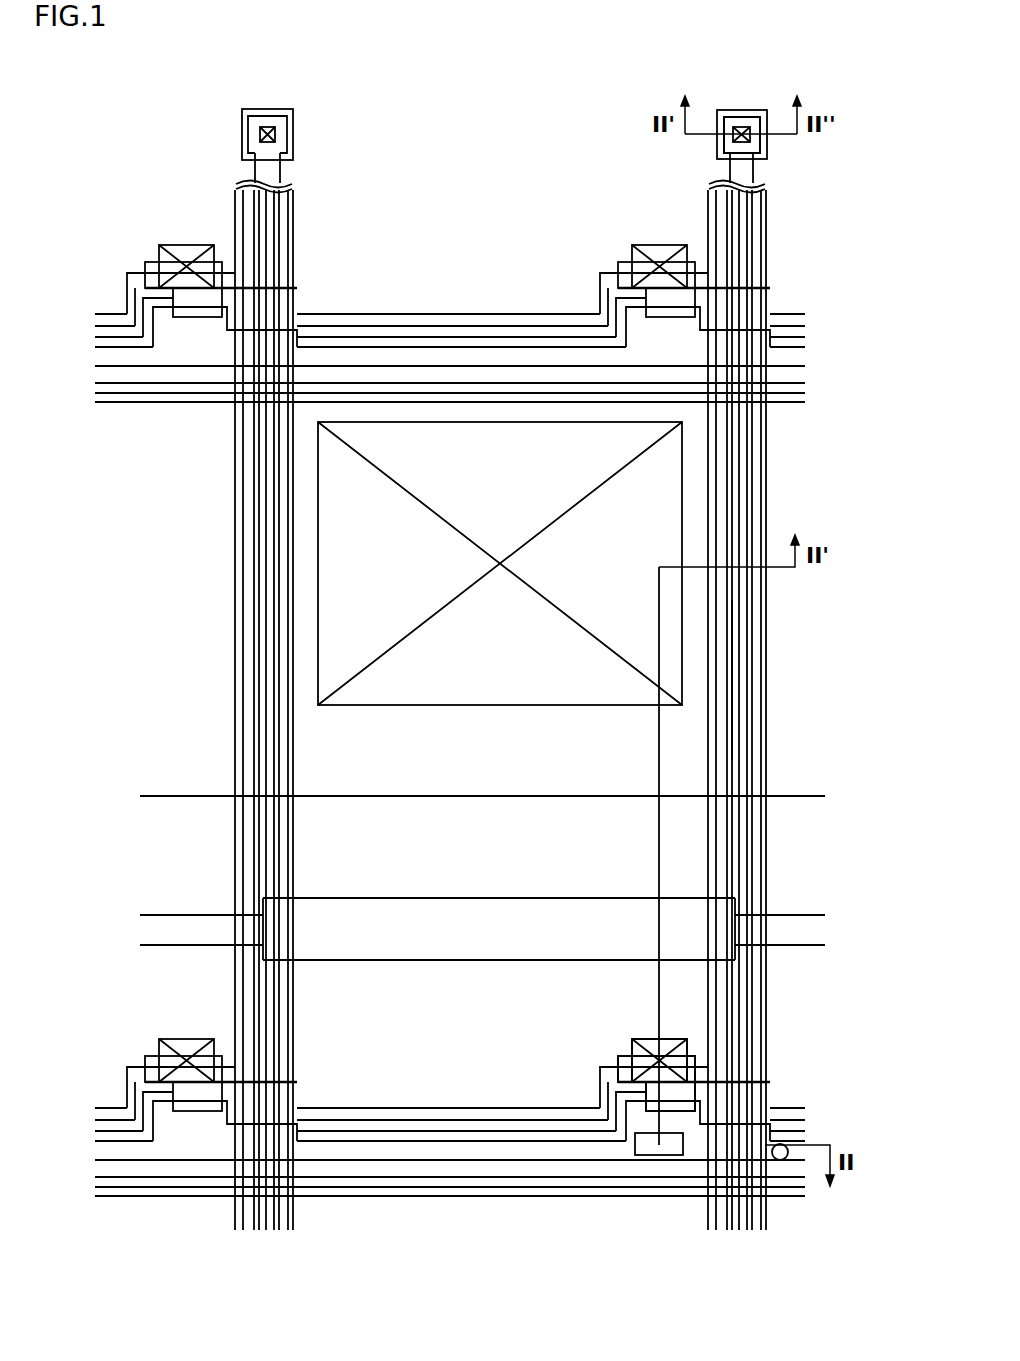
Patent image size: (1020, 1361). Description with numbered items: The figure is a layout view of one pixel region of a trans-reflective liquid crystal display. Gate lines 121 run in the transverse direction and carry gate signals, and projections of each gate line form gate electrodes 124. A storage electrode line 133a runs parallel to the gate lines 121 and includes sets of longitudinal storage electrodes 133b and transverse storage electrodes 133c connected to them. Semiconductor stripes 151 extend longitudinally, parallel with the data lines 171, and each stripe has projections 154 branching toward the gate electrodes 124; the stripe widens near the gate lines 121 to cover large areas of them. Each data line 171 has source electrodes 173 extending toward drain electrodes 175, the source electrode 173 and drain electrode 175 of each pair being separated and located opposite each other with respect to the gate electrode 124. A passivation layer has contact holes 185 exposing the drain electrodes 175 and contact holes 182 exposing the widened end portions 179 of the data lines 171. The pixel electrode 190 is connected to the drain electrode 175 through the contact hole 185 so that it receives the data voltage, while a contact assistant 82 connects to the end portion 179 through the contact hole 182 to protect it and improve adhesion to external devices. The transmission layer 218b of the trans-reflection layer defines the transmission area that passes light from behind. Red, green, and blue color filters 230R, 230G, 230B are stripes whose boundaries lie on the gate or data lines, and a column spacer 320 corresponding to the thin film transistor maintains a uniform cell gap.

The contact assistant 82 is at (768, 148).
The gate line 121 is at (510, 1162).
The gate electrode 124 is at (720, 1110).
The storage electrode line 133a is at (432, 383).
The longitudinal storage electrode 133b is at (715, 465).
The transverse storage electrode 133c is at (423, 1118).
The semiconductor stripe 151 is at (747, 682).
The projection 154 is at (625, 1145).
The data line 171 is at (752, 728).
The source electrode 173 is at (683, 1140).
The drain electrode 175 is at (690, 1062).
The end portion of data line 179 is at (748, 120).
The contact hole 182 is at (737, 120).
The contact hole 185 is at (640, 1048).
The pixel electrode 190 is at (717, 628).
The transmission layer 218b is at (660, 607).
The red color filter 230R is at (187, 783).
The green color filter 230G is at (500, 783).
The blue color filter 230B is at (795, 783).
The column spacer 320 is at (790, 1162).